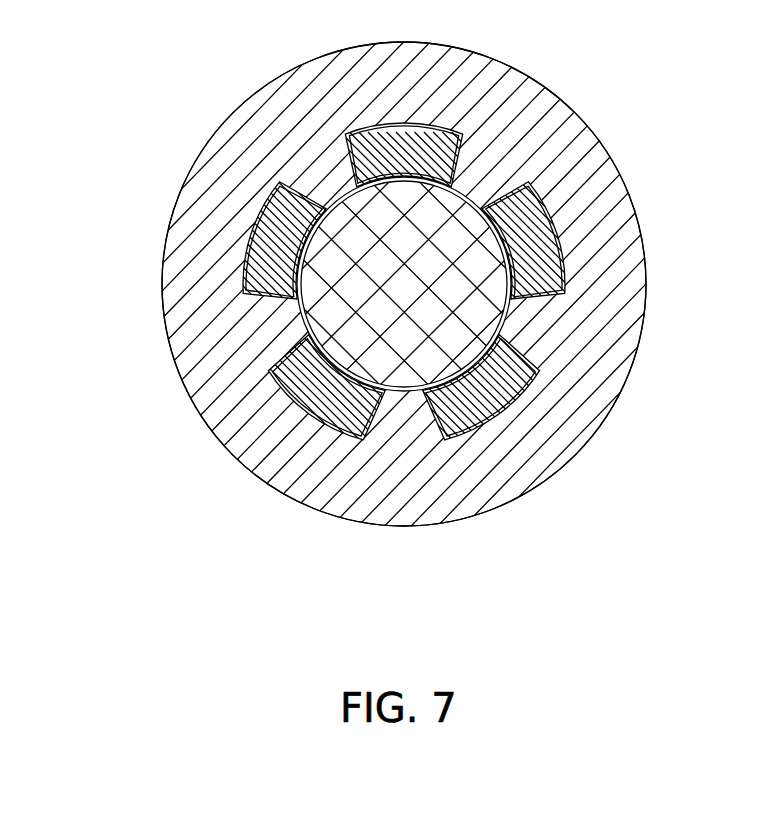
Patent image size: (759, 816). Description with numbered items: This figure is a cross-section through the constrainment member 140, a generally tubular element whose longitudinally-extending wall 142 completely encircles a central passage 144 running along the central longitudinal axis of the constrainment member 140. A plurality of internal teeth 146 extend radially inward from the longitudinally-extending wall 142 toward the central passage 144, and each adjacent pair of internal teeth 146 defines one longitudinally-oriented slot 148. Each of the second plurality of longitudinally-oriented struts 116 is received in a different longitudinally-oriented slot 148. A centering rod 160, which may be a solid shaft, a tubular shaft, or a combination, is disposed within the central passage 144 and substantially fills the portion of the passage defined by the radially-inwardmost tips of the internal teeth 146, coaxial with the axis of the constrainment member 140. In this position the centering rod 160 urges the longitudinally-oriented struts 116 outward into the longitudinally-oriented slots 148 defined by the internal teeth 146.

The constrainment member 140 is at (594, 117).
The longitudinally-extending wall 142 is at (257, 450).
The central passage 144 is at (347, 130).
The internal teeth 146 is at (538, 327).
The longitudinally-oriented slot 148 is at (563, 260).
The second plurality of longitudinally-oriented struts 116 is at (430, 126).
The centering rod 160 is at (327, 312).